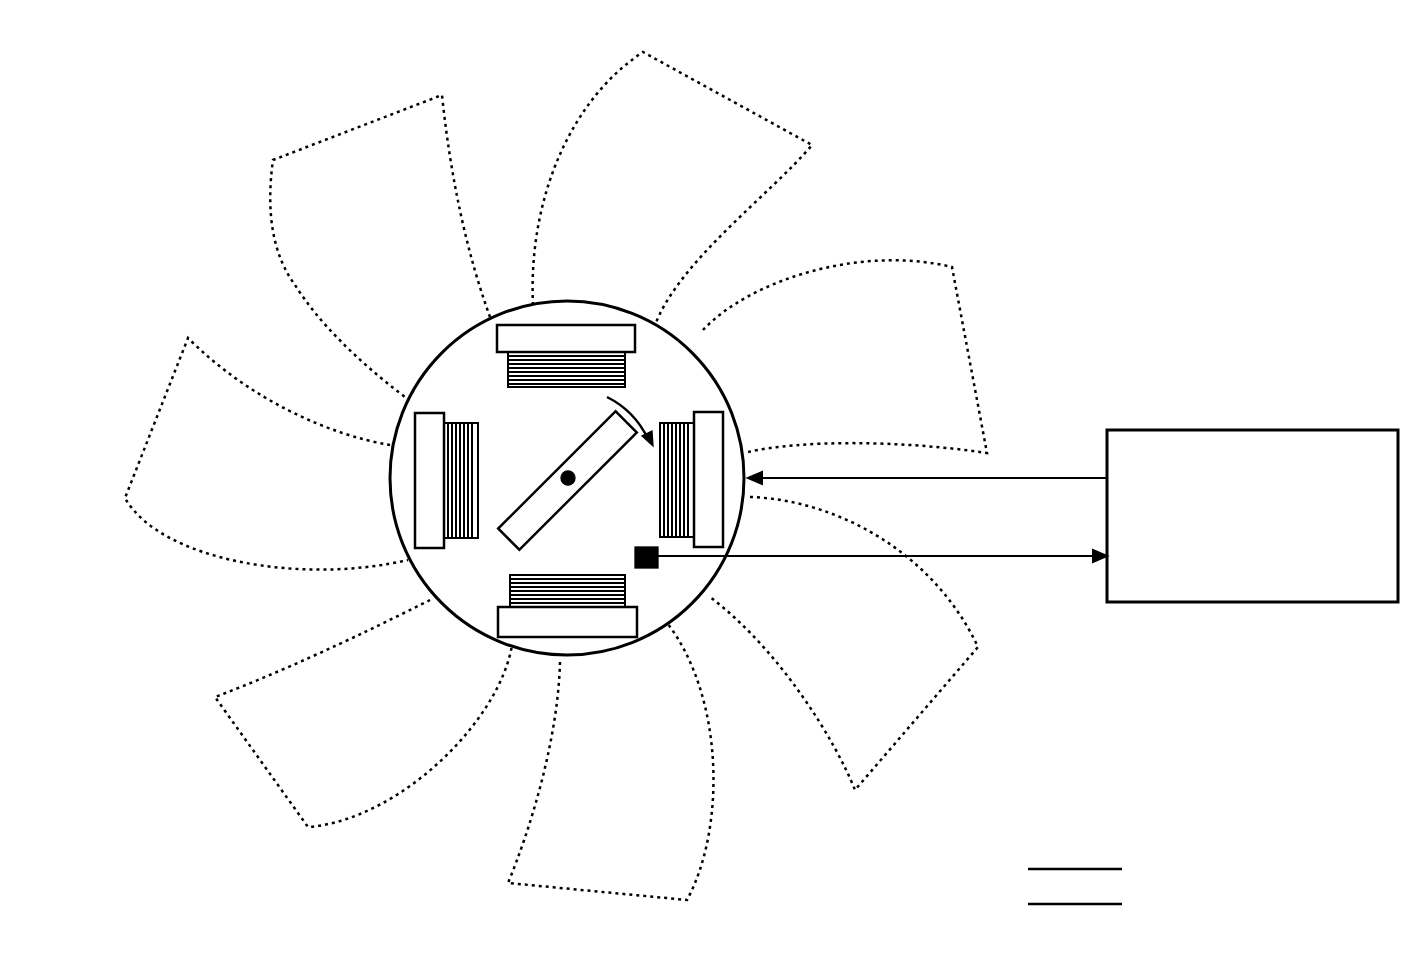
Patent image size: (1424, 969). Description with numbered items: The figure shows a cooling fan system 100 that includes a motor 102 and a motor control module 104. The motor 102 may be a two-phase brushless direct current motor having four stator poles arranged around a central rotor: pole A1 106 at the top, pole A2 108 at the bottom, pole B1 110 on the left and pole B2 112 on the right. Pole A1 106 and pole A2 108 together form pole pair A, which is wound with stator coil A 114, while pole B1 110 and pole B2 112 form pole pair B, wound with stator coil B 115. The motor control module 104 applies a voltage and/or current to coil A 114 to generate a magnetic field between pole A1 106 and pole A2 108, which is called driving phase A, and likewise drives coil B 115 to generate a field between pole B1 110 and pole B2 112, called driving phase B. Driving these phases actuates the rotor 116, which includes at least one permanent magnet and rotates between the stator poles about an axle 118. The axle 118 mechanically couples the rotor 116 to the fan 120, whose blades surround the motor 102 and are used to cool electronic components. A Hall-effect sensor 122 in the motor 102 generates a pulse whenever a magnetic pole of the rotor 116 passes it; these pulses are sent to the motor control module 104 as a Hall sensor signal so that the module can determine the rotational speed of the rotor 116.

The cooling fan system 100 is at (215, 76).
The motor 102 is at (720, 380).
The motor control module 104 is at (1253, 430).
The pole A1 106 is at (497, 341).
The pole A2 108 is at (497, 615).
The pole B1 110 is at (435, 413).
The pole B2 112 is at (702, 412).
The stator coil A 114 is at (562, 387).
The stator coil B 115 is at (660, 488).
The rotor 116 is at (566, 506).
The axle 118 is at (562, 476).
The fan 120 is at (728, 98).
The Hall-effect sensor 122 is at (646, 568).